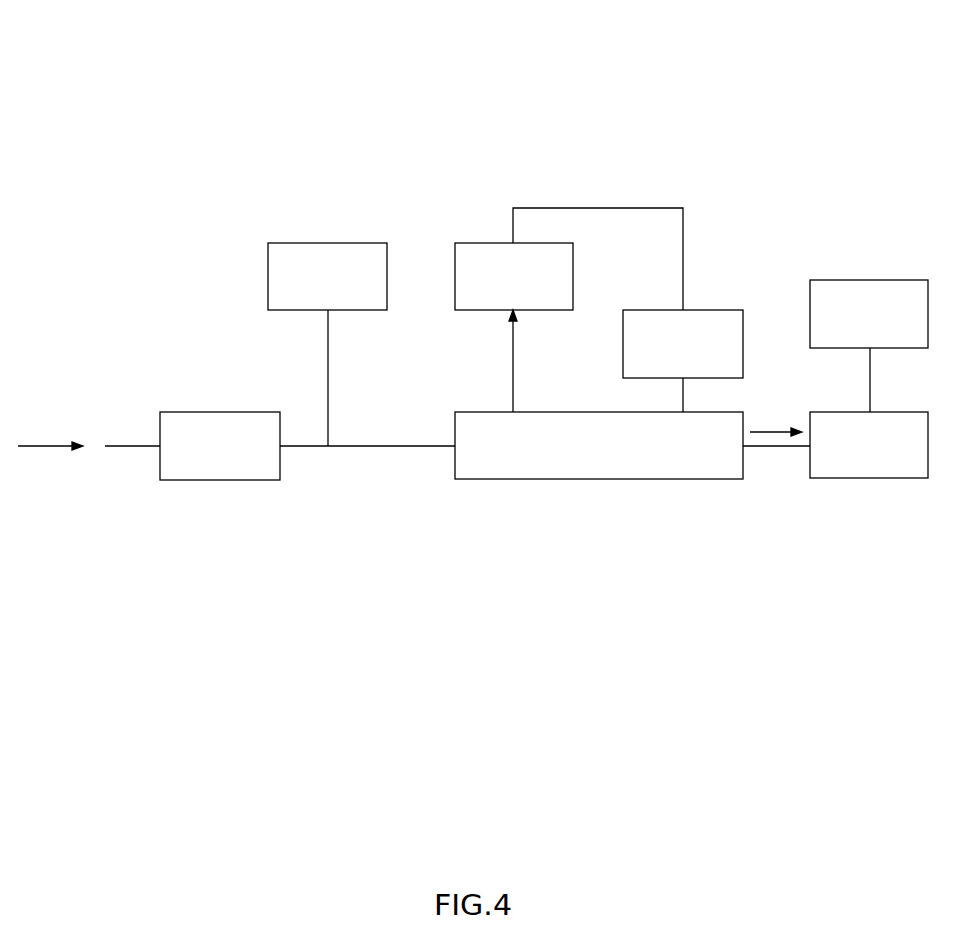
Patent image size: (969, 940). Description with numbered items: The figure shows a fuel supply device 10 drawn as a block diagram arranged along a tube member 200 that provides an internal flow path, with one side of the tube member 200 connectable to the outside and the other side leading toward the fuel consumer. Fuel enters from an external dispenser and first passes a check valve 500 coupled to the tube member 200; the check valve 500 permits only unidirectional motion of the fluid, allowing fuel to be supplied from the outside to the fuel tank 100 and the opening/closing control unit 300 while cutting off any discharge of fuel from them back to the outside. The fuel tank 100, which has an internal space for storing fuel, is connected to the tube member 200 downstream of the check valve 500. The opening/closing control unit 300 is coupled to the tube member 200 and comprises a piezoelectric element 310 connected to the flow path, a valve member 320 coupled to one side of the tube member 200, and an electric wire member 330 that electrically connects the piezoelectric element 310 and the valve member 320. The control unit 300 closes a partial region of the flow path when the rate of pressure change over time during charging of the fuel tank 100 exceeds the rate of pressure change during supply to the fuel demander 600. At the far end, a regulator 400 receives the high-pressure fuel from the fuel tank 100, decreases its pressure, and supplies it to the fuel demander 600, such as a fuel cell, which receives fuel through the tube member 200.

The fuel supply device 10 is at (168, 43).
The fuel tank 100 is at (327, 243).
The tube member 200 is at (455, 465).
The opening/closing control unit 300 is at (599, 251).
The piezoelectric element 310 is at (480, 243).
The valve member 320 is at (683, 276).
The electric wire member 330 is at (609, 208).
The regulator 400 is at (870, 478).
The check valve 500 is at (220, 412).
The fuel demander 600 is at (870, 280).